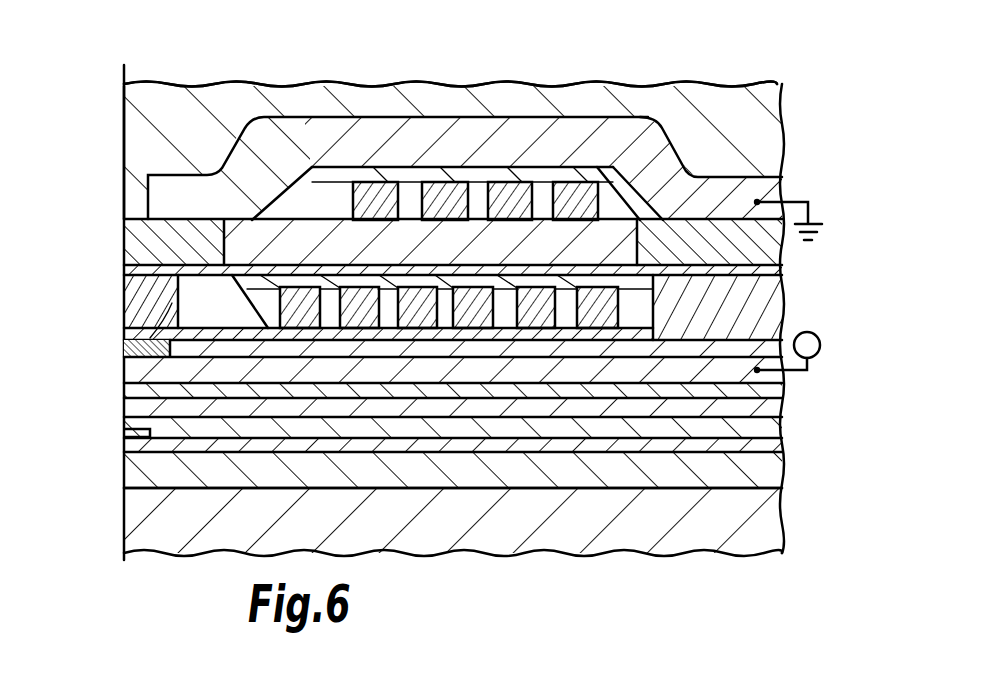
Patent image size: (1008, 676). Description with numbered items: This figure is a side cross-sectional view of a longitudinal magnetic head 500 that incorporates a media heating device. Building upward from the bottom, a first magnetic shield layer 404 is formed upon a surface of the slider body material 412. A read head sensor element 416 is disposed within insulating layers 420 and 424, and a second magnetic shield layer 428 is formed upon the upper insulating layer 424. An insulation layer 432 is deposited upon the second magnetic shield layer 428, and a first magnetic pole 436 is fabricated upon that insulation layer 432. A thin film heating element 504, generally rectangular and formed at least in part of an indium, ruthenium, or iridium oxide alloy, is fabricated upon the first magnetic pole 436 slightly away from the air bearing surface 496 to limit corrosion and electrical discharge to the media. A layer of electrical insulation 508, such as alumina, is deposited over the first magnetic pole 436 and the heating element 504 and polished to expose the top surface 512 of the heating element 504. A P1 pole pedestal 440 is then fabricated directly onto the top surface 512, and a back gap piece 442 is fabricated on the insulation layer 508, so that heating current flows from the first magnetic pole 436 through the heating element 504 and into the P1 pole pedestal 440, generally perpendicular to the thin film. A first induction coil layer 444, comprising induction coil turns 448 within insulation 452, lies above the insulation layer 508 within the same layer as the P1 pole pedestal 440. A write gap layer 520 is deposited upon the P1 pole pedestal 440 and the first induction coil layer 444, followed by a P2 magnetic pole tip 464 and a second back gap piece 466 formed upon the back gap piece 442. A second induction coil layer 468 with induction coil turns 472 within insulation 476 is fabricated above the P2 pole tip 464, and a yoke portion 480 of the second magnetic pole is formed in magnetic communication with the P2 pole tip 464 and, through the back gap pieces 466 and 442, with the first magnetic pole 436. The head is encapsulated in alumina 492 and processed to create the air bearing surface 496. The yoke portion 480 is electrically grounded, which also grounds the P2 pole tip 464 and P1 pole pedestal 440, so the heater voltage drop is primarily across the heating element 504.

The longitudinal magnetic head 500 is at (221, 71).
The insulation 476 is at (307, 177).
The yoke portion 480 is at (357, 137).
The alumina 492 is at (457, 93).
The second induction coil layer 468 is at (540, 187).
The air bearing surface 496 is at (124, 152).
The P2 magnetic pole tip 464 is at (124, 238).
The second back gap piece 466 is at (758, 256).
The write gap layer 520 is at (124, 268).
The top surface 512 is at (174, 303).
The insulation 452 is at (253, 292).
The P1 pole pedestal 440 is at (124, 300).
The induction coil turns 448 is at (456, 278).
The first induction coil layer 444 is at (567, 282).
The induction coil turns 472 is at (406, 222).
The back gap piece 442 is at (757, 302).
The layer of electrical insulation 508 is at (124, 340).
The thin film heating element 504 is at (124, 360).
The first magnetic pole (P1) 436 is at (775, 380).
The insulation layer 432 is at (778, 397).
The second magnetic shield layer (S2) 428 is at (785, 410).
The insulating layer 424 is at (782, 445).
The read head sensor element 416 is at (148, 436).
The insulating layer 420 is at (124, 447).
The first magnetic shield layer (S1) 404 is at (124, 472).
The slider body material 412 is at (140, 512).